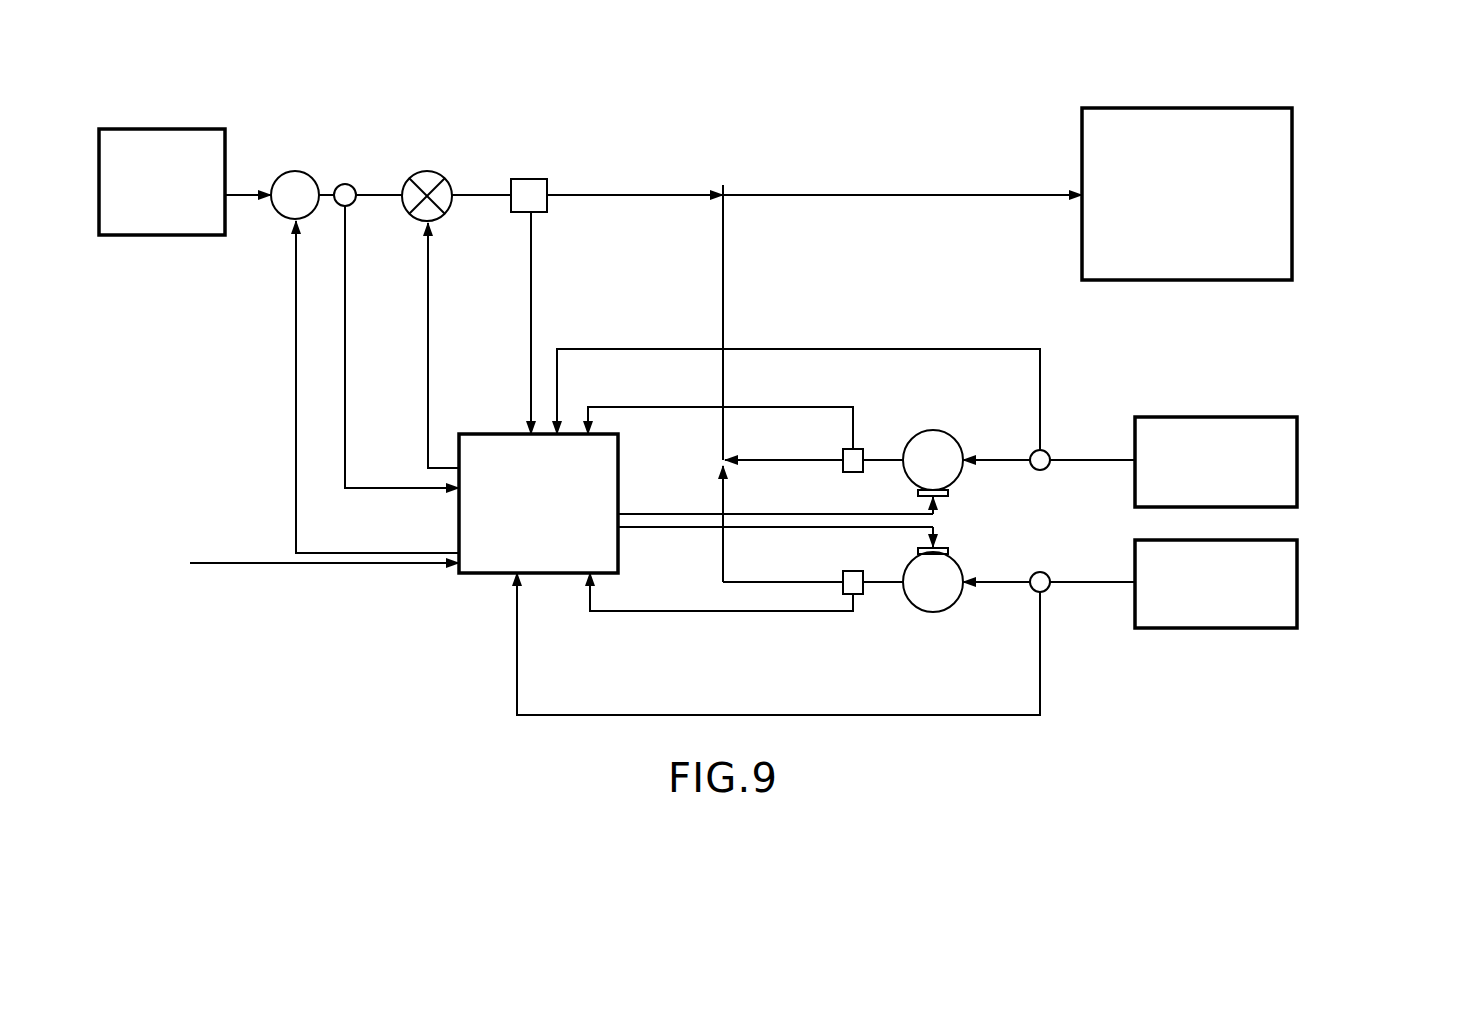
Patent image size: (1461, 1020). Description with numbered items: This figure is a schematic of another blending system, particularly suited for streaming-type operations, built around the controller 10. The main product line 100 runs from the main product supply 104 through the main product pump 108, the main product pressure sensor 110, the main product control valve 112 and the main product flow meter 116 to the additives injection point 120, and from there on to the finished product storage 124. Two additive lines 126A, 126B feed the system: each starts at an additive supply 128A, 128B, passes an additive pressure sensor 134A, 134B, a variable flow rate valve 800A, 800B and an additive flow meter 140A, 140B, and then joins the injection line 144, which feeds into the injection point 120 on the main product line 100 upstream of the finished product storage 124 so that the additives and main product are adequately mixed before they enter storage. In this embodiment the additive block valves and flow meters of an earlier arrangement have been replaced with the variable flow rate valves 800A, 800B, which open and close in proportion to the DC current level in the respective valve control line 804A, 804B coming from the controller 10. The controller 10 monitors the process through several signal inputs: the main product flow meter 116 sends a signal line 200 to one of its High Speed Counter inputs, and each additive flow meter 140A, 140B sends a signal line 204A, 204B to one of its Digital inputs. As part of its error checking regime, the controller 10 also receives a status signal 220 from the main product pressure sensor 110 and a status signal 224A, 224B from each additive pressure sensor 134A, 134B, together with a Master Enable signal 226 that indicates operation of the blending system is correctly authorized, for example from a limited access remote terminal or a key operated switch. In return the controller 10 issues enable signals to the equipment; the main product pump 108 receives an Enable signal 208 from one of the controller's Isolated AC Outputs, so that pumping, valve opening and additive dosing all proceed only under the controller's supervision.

The controller 10 is at (480, 577).
The main product line 100 is at (608, 195).
The main product supply 104 is at (160, 129).
The main product pump 108 is at (292, 171).
The main product pressure sensor 110 is at (343, 184).
The main product control valve 112 is at (433, 172).
The main product flow meter 116 is at (547, 185).
The additives injection point 120 is at (723, 195).
The finished product storage 124 is at (1157, 108).
The additive line 126A is at (780, 463).
The additive line 126B is at (777, 582).
The additive supply 128A is at (1297, 470).
The additive supply 128B is at (1297, 587).
The additive pressure sensor 134A is at (1040, 450).
The additive pressure sensor 134B is at (1040, 572).
The additive flow meter 140A is at (855, 447).
The additive flow meter 140B is at (858, 598).
The injection line 144 is at (723, 310).
The signal line 200 is at (531, 303).
The signal line 204A is at (740, 407).
The signal line 204B is at (698, 613).
The Enable signal 208 is at (296, 385).
The status signal 220 is at (344, 325).
The status signal 224A is at (1040, 373).
The status signal 224B is at (1040, 640).
The Master Enable signal 226 is at (233, 563).
The variable flow rate valve 800A is at (955, 435).
The variable flow rate valve 800B is at (948, 612).
The valve control line 804A is at (940, 518).
The valve control line 804B is at (940, 533).